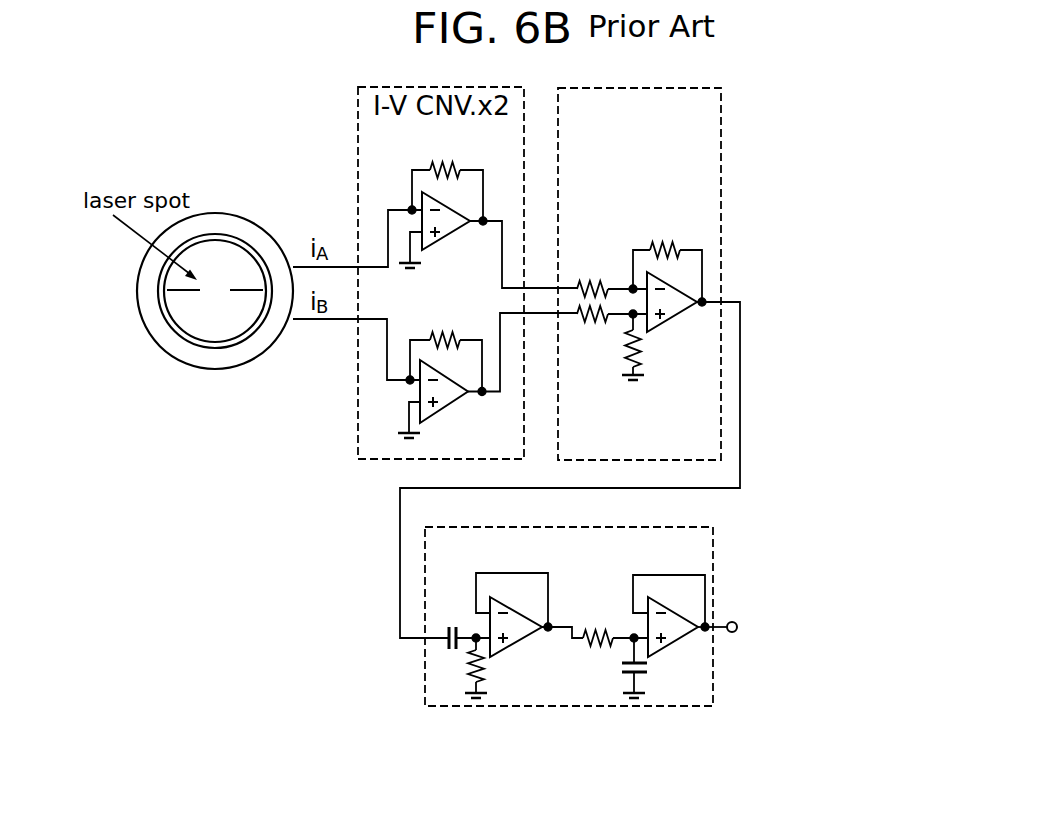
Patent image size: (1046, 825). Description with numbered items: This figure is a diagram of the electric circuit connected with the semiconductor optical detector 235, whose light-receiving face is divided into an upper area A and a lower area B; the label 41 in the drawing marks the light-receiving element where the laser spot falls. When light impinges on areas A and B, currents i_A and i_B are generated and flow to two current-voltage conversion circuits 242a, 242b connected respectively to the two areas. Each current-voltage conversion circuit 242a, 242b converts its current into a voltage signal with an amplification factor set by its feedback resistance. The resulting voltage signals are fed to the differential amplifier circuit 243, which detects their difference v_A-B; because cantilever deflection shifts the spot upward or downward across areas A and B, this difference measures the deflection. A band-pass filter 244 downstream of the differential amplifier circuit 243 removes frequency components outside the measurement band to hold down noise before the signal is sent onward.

The optical detector 235 is at (232, 213).
The light receiving element (divided photodetector surface) 41 is at (200, 302).
The current-voltage conversion circuit 242a is at (405, 147).
The current-voltage conversion circuit 242b is at (377, 407).
The differential amplifier circuit 243 is at (712, 268).
The band-pass filter 244 is at (710, 558).